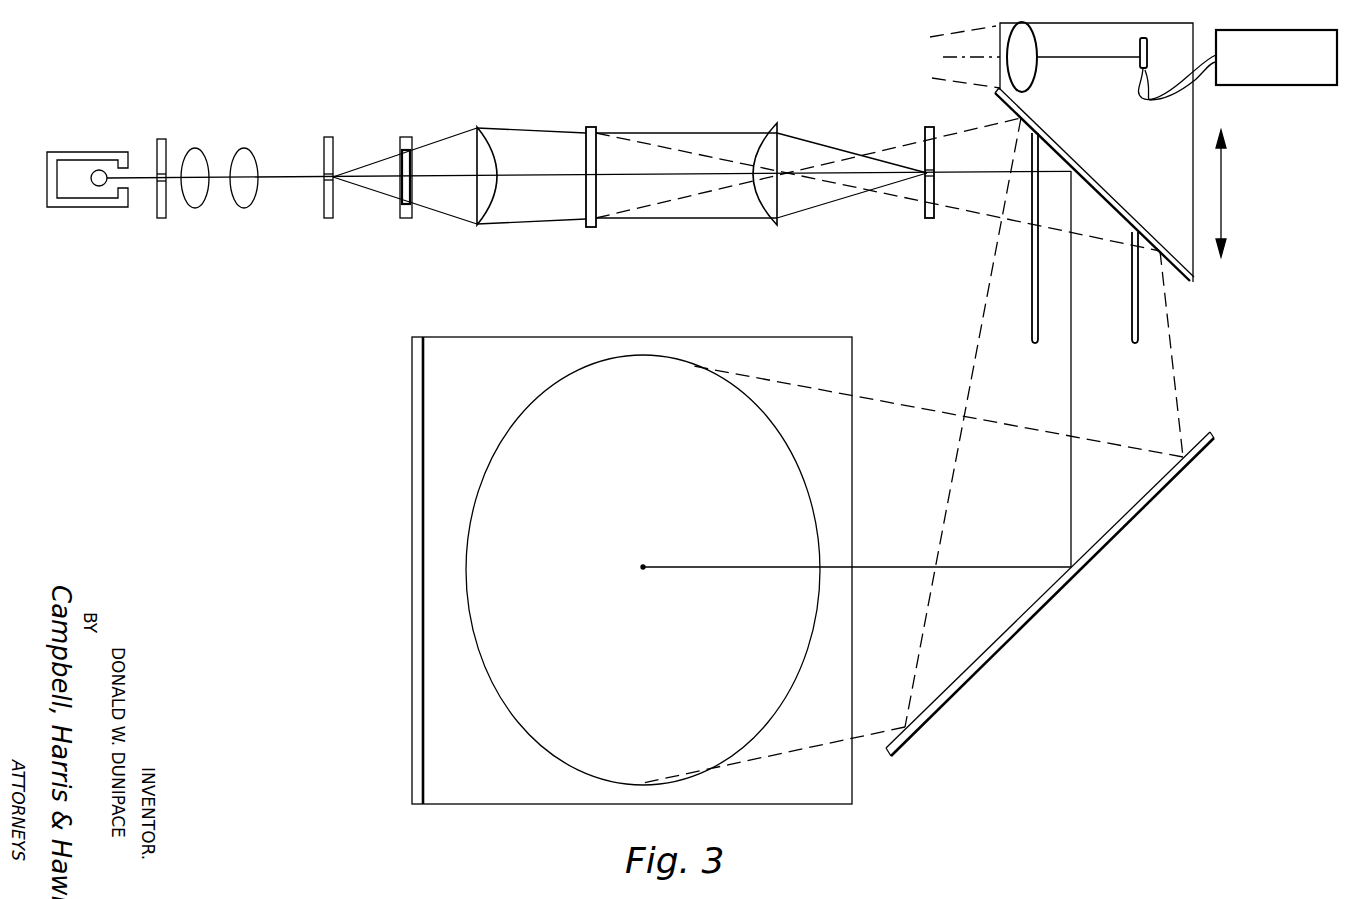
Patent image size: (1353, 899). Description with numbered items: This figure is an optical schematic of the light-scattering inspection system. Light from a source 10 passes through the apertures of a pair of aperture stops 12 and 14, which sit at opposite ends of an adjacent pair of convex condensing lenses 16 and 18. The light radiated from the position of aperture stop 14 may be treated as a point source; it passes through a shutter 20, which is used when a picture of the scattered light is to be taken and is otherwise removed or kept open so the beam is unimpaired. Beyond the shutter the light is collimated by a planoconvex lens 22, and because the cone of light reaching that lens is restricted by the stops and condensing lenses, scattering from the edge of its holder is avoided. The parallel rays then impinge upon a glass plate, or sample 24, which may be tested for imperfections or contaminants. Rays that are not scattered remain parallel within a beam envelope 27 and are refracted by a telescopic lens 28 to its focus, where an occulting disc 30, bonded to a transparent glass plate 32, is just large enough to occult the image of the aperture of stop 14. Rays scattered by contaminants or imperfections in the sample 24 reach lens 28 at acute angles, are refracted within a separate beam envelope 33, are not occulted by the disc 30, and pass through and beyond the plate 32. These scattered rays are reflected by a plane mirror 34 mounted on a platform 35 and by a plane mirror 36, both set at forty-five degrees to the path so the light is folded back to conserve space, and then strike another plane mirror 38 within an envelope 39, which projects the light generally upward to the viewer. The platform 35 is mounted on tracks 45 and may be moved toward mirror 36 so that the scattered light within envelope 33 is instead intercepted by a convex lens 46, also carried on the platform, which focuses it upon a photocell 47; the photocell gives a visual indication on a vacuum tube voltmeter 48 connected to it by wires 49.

The source 10 is at (101, 170).
The aperture stop 12 is at (160, 218).
The aperture stop 14 is at (328, 218).
The convex condensing lens 16 is at (195, 148).
The convex condensing lens 18 is at (244, 148).
The shutter 20 is at (408, 137).
The planoconvex lens 22 is at (480, 225).
The glass plate, or sample 24 is at (590, 227).
The beam envelope 27 is at (678, 133).
The telescopic lens 28 is at (777, 225).
The occulting disc 30 is at (925, 175).
The transparent glass plate 32 is at (934, 184).
The beam envelope 33 is at (986, 132).
The plane mirror 34 is at (1130, 212).
The platform 35 is at (1071, 152).
The plane mirror 36 is at (1116, 534).
The plane mirror 38 is at (632, 570).
The envelope 39 is at (506, 437).
The tracks 45 is at (1032, 312).
The convex lens 46 is at (1037, 68).
The photocell 47 is at (1147, 46).
The vacuum tube voltmeter 48 is at (1272, 85).
The wires 49 is at (1150, 100).